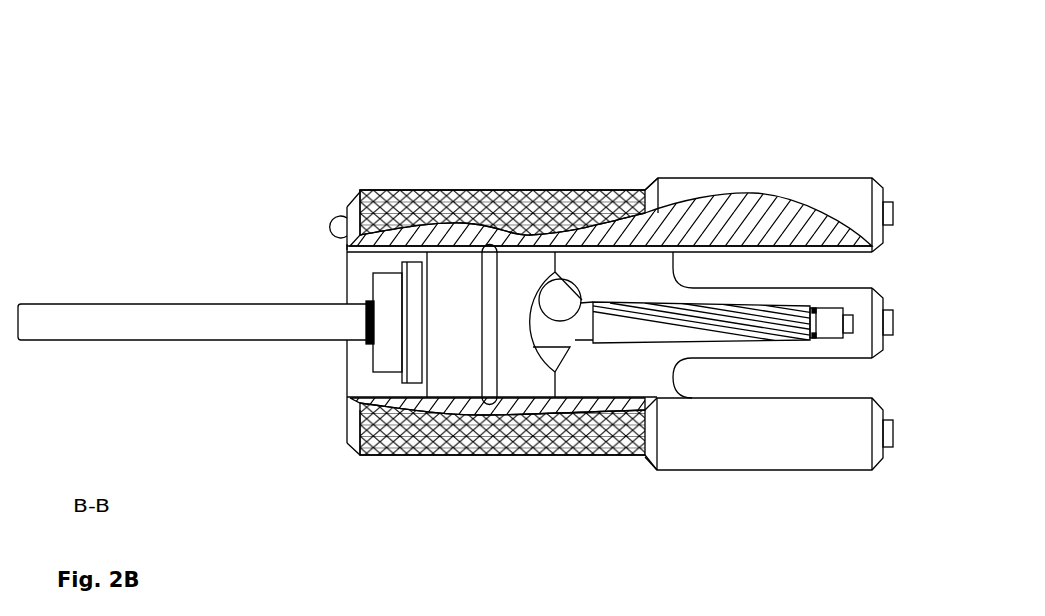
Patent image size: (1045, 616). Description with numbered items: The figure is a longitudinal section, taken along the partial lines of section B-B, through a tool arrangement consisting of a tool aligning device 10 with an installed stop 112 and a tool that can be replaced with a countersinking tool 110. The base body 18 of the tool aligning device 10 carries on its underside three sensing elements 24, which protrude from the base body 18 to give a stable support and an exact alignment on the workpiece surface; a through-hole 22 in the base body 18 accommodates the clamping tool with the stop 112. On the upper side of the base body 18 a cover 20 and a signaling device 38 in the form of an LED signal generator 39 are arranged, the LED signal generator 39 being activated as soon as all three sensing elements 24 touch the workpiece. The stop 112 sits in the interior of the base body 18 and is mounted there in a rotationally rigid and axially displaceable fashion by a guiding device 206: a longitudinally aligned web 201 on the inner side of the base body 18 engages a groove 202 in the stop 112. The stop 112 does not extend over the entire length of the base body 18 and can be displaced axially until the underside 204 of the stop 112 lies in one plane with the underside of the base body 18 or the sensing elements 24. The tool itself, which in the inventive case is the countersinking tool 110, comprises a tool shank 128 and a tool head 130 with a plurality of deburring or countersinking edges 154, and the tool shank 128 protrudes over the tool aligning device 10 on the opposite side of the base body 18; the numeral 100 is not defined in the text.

The tool aligning device 10 is at (606, 80).
The base body 18 is at (692, 195).
The cover 20 is at (354, 435).
The through-hole 22 is at (741, 390).
The sensing elements 24 is at (888, 195).
The signaling device 38 is at (306, 177).
The LED signal generator 39 is at (343, 217).
The push rod 100 is at (196, 360).
The tool shank 128 is at (145, 325).
The countersinking tool 110 is at (767, 308).
The stop 112 is at (438, 260).
The tool head 130 is at (815, 323).
The deburring or countersinking edges 154 is at (817, 340).
The web 201 is at (365, 249).
The groove 202 is at (366, 255).
The underside of the stop 204 is at (565, 246).
The guiding device 206 is at (333, 245).